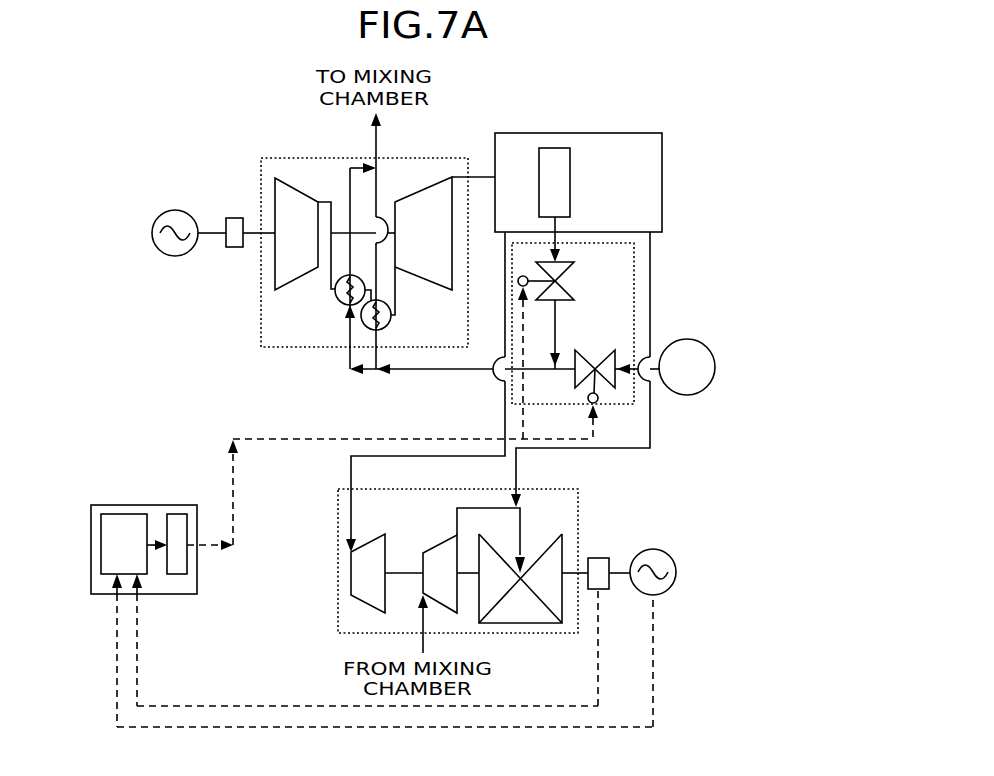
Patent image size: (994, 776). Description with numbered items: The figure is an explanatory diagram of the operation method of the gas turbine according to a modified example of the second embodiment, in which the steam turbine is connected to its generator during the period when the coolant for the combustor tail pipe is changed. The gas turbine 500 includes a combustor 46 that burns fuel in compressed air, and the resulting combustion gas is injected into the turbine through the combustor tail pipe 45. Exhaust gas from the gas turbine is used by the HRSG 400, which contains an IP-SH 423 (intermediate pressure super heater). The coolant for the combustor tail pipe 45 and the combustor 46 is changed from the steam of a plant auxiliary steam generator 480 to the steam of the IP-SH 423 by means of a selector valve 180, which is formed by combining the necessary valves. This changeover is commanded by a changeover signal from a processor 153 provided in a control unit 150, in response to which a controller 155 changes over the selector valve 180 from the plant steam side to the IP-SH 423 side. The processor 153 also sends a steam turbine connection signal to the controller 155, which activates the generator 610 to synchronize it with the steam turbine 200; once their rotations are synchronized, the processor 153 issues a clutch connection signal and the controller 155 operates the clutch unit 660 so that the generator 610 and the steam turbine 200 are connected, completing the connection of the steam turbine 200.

The gas turbine 500 is at (323, 228).
The combustor 46 is at (337, 298).
The combustor tail pipe 45 is at (391, 325).
The IP-SH (intermediate pressure-super heater) 423 is at (551, 148).
The HRSG (heat recovery steam generator) 400 is at (609, 156).
The selector valve 180 is at (634, 272).
The plant auxiliary steam generator 480 is at (687, 395).
The steam turbine 200 is at (328, 488).
The generator 610 is at (598, 558).
The clutch unit 660 is at (654, 549).
The control unit 150 is at (140, 518).
The processor 153 is at (122, 514).
The controller 155 is at (178, 514).